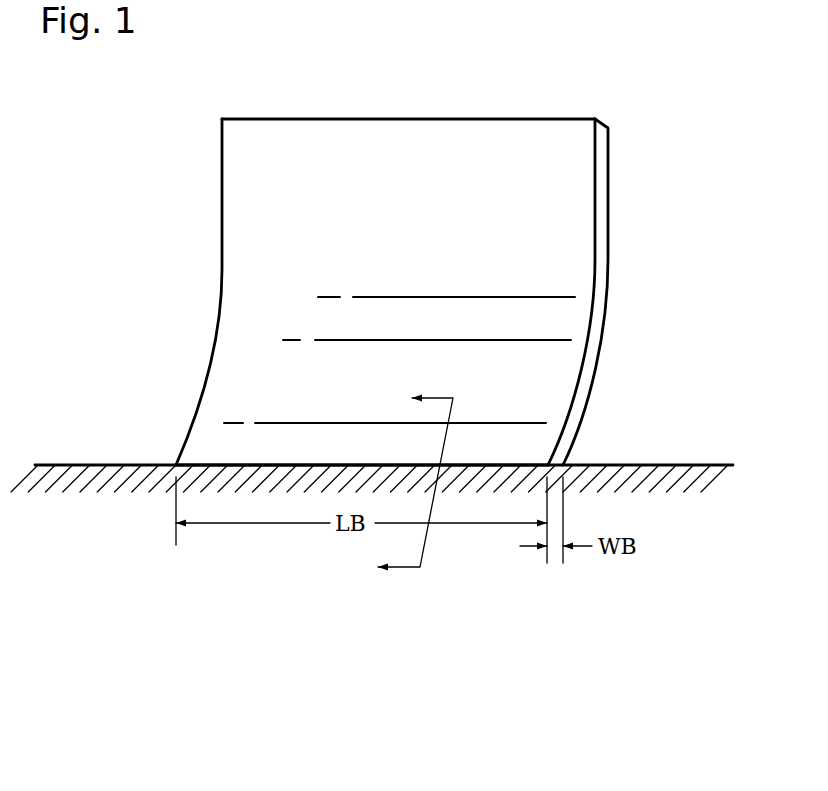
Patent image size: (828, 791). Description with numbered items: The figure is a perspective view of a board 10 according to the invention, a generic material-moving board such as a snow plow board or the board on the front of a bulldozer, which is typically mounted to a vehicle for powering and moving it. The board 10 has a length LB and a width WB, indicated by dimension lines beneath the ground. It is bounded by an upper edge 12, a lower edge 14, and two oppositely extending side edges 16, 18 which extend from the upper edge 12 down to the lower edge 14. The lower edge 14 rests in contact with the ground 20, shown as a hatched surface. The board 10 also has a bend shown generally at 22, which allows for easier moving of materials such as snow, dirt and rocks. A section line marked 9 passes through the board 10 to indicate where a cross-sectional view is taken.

The board 10 is at (575, 95).
The upper edge 12 is at (420, 119).
The lower edge 14 is at (365, 465).
The side edge 16 is at (609, 186).
The side edge 18 is at (222, 280).
The ground 20 is at (688, 465).
The bend 22 is at (636, 289).
The section line 9- 9 is at (415, 487).